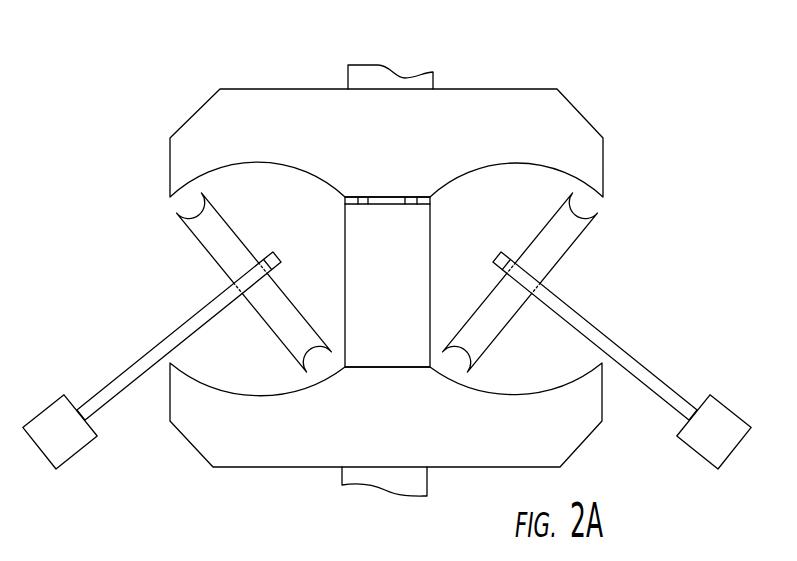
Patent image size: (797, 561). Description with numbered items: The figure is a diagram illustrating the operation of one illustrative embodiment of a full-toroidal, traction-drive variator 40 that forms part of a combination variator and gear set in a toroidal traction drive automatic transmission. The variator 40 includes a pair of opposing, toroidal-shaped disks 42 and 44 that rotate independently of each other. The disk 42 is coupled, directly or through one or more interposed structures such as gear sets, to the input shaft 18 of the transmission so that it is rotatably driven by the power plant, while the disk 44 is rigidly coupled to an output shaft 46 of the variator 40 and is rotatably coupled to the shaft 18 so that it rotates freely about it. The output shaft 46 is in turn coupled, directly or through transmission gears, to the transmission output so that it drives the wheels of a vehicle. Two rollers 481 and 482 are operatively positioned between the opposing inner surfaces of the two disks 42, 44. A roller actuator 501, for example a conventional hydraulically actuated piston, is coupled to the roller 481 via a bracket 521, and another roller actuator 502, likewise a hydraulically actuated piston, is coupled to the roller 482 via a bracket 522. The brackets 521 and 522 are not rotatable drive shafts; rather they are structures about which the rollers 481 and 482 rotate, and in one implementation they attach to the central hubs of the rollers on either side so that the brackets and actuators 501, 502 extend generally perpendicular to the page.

The variator 40 is at (394, 281).
The disk 44 is at (510, 89).
The disk 42 is at (243, 467).
The output shaft 46 is at (378, 65).
The input shaft 18 is at (400, 497).
The roller 481 is at (593, 219).
The roller 482 is at (200, 237).
The bracket 521 is at (602, 333).
The bracket 522 is at (112, 380).
The roller actuator 501 is at (721, 416).
The roller actuator 502 is at (78, 455).